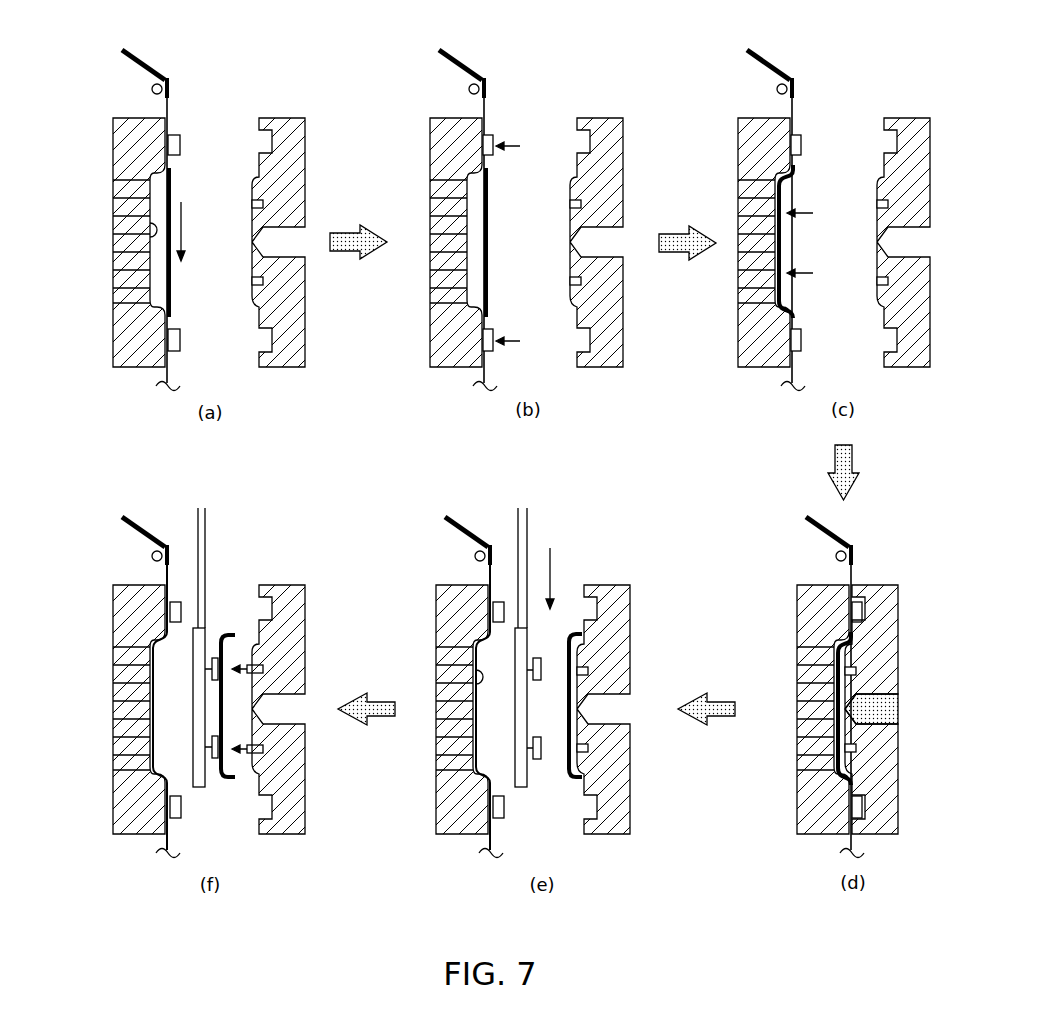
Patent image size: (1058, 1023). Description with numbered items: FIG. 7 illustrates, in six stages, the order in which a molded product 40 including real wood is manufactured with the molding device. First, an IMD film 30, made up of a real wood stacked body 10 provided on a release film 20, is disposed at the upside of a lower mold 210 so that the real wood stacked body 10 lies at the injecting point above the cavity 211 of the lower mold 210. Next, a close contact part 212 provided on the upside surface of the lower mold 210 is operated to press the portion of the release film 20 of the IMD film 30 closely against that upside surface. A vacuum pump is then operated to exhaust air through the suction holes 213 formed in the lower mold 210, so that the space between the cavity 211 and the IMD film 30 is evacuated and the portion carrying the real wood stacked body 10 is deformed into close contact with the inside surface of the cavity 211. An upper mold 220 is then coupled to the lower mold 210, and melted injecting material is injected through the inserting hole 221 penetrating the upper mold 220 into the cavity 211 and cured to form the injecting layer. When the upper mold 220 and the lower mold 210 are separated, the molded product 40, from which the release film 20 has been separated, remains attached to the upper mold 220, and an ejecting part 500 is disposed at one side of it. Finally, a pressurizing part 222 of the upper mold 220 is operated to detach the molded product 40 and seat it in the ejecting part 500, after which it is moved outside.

The real wood stacked body 10 is at (171, 190).
The release film 20 is at (170, 115).
The IMD film 30 is at (247, 33).
The molded product 40 is at (573, 796).
The lower mold 210 is at (128, 139).
The cavity 211 is at (150, 229).
The close contact part 212 is at (494, 130).
The suction holes 213 is at (757, 175).
The upper mold 220 is at (300, 133).
The inserting hole 221 is at (878, 695).
The pressurizing part 222 is at (265, 669).
The ejecting part 500 is at (530, 529).